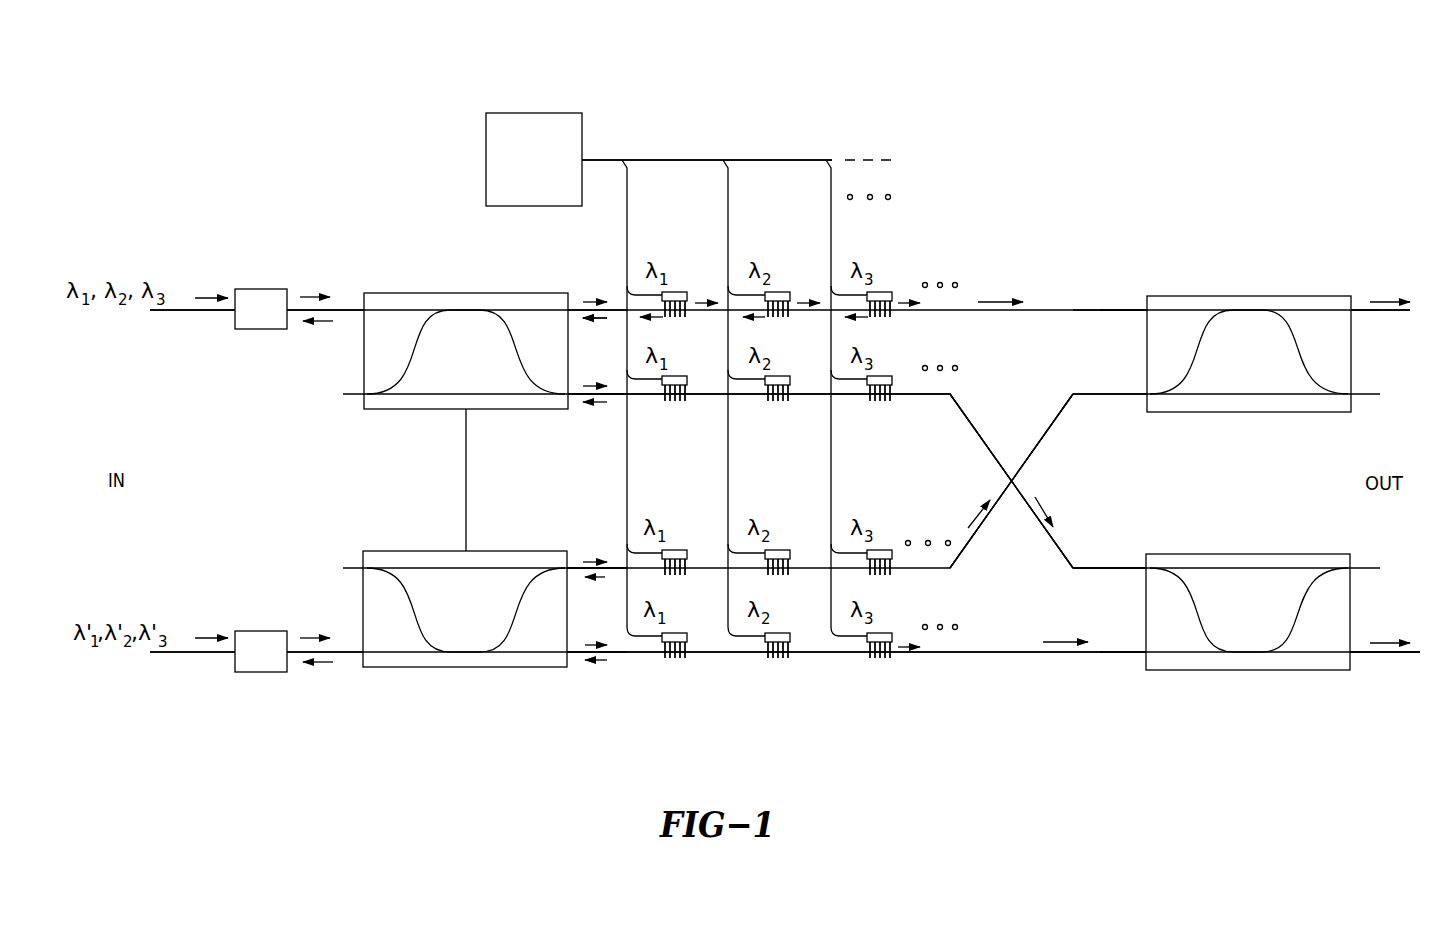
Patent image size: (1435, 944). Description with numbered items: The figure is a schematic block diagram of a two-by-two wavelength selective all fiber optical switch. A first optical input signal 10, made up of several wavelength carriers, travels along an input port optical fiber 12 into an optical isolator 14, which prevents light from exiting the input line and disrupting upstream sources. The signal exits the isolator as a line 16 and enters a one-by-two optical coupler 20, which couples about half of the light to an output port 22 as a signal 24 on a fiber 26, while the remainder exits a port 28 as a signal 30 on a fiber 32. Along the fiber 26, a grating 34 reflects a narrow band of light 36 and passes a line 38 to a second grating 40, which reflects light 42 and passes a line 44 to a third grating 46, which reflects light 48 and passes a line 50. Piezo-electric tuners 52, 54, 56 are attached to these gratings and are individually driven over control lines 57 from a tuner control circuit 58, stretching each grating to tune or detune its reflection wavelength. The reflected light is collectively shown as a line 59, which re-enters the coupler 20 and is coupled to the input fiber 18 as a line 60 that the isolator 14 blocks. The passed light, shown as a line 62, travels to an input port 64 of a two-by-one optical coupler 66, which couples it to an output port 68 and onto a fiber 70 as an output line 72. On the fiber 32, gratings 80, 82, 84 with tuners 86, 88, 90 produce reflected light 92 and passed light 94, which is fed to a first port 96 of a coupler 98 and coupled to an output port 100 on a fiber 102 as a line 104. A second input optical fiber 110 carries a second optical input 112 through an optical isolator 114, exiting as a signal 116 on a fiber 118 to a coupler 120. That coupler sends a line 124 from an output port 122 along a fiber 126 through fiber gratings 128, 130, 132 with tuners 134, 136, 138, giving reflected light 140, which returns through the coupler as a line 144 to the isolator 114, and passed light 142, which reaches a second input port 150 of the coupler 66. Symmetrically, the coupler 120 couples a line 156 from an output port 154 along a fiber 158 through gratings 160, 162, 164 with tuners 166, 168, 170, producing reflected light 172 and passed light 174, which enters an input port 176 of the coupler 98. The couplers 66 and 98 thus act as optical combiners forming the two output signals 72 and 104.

The first optical input signal 10 is at (200, 297).
The input port optical fiber 12 is at (212, 314).
The optical isolator 14 is at (262, 289).
The input signal line 16 is at (312, 297).
The input fiber 18 is at (345, 300).
The 1×2 optical coupler 20 is at (427, 293).
The output port 22 is at (578, 298).
The output signal 24 is at (590, 301).
The fiber 26 is at (610, 322).
The port 28 is at (575, 409).
The output signal 30 is at (590, 385).
The fiber 32 is at (614, 404).
The grating 34 is at (672, 318).
The reflected light 36 is at (653, 319).
The passed light 38 is at (703, 301).
The second grating 40 is at (777, 318).
The reflected light 42 is at (755, 319).
The passed light 44 is at (803, 301).
The third grating 46 is at (890, 318).
The reflected light 48 is at (858, 319).
The passed light 50 is at (905, 301).
The piezo-electric tuner 52 is at (677, 292).
The piezo-electric tuner 54 is at (780, 292).
The piezo-electric tuner 56 is at (883, 292).
The control lines 57 is at (595, 157).
The tuner control circuit 58 is at (558, 112).
The reflected light 59 is at (592, 319).
The reflected signal 60 is at (320, 323).
The passed light 62 is at (990, 301).
The input port 64 is at (1147, 308).
The 2×1 optical coupler 66 is at (1205, 300).
The output port 68 is at (1355, 308).
The output fiber 70 is at (1385, 313).
The output signal 72 is at (1382, 301).
The grating 80 is at (668, 401).
The grating 82 is at (770, 401).
The grating 84 is at (872, 401).
The piezo-electric tuner 86 is at (688, 385).
The piezo-electric tuner 88 is at (790, 385).
The piezo-electric tuner 90 is at (893, 385).
The reflected light 92 is at (598, 403).
The passed light 94 is at (1050, 505).
The first port 96 is at (1147, 566).
The 2×1 optical coupler 98 is at (1227, 670).
The output port 100 is at (1350, 655).
The second output fiber 102 is at (1392, 656).
The output signal 104 is at (1385, 642).
The second input optical fiber 110 is at (198, 656).
The second optical input 112 is at (208, 637).
The optical isolator 114 is at (257, 630).
The optical signal 116 is at (310, 637).
The fiber 118 is at (347, 656).
The 1×2 optical coupler 120 is at (427, 551).
The output port 122 is at (575, 560).
The coupled light 124 is at (585, 561).
The fiber 126 is at (963, 552).
The fiber grating 128 is at (665, 574).
The fiber grating 130 is at (770, 574).
The fiber grating 132 is at (868, 574).
The piezo-electric tuner 134 is at (680, 550).
The piezo-electric tuner 136 is at (785, 550).
The piezo-electric tuner 138 is at (880, 550).
The reflected light 140 is at (597, 579).
The passed light 142 is at (973, 517).
The reflected signal 144 is at (322, 666).
The second input port 150 is at (1147, 398).
The output port 154 is at (578, 667).
The coupled light 156 is at (588, 645).
The fiber 158 is at (1025, 656).
The grating 160 is at (668, 658).
The grating 162 is at (768, 658).
The grating 164 is at (873, 658).
The piezo-electric tuner 166 is at (688, 642).
The piezo-electric tuner 168 is at (790, 642).
The piezo-electric tuner 170 is at (892, 642).
The reflected light 172 is at (597, 662).
The passed light 174 is at (1072, 641).
The input port 176 is at (1147, 660).